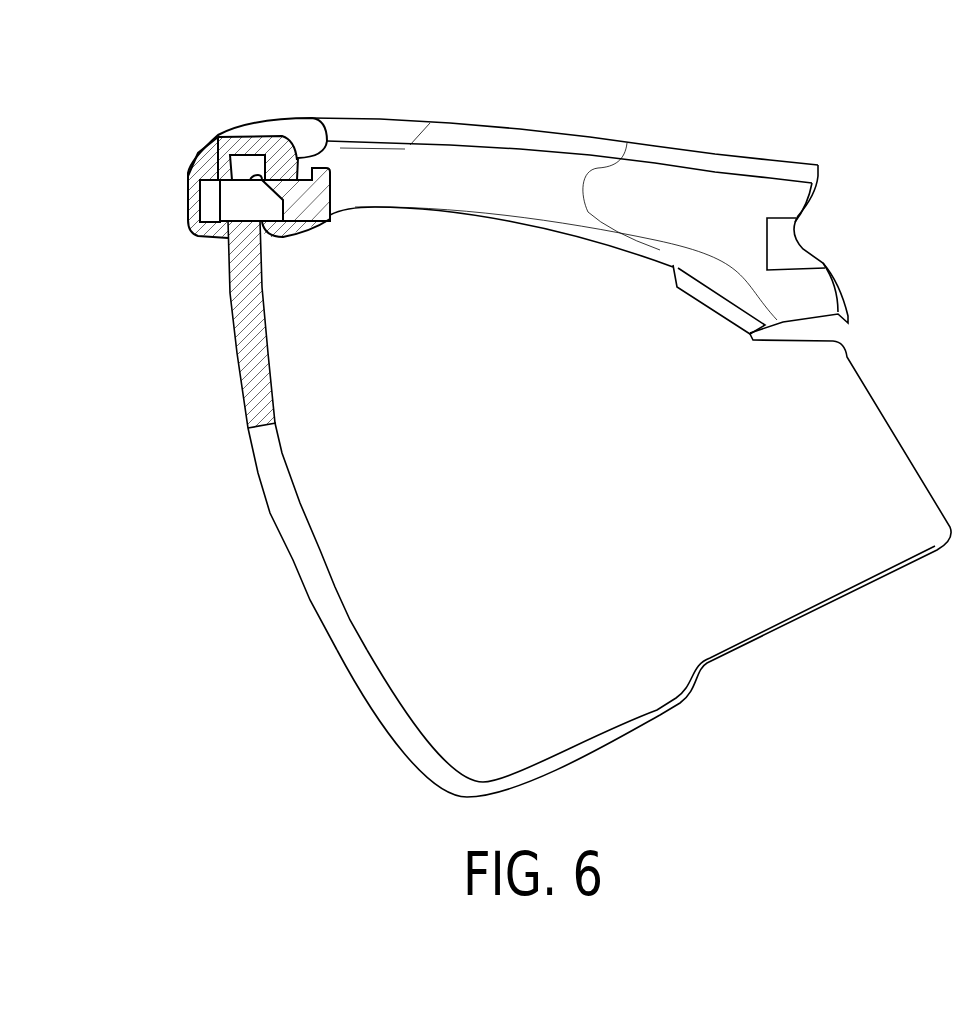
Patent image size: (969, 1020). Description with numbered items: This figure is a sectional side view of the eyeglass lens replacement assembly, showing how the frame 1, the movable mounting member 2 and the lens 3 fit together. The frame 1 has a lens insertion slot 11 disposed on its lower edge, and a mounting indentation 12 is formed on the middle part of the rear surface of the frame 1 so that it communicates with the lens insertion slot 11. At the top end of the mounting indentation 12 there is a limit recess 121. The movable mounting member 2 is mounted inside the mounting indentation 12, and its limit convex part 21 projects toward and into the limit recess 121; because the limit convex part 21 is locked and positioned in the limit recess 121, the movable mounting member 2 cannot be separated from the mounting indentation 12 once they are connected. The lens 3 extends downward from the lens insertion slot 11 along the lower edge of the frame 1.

The frame 1 is at (468, 132).
The lens insertion slot 11 is at (237, 147).
The mounting indentation 12 is at (212, 208).
The limit recess 121 is at (203, 148).
The movable mounting member 2 is at (332, 195).
The limit convex part 21 is at (259, 158).
The lens 3 is at (267, 472).